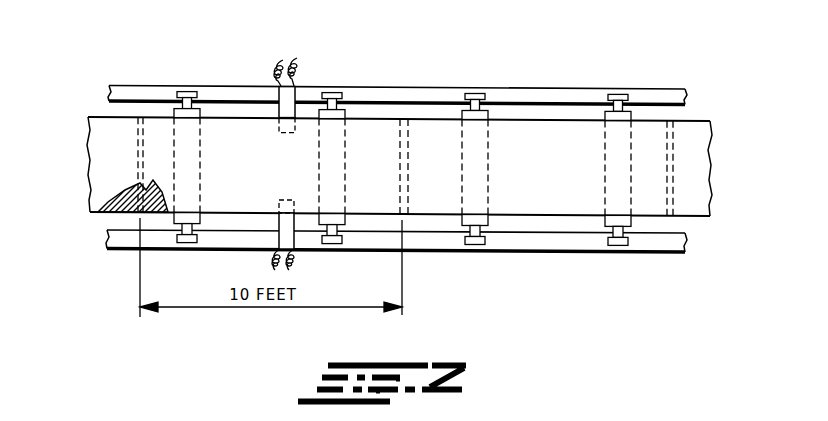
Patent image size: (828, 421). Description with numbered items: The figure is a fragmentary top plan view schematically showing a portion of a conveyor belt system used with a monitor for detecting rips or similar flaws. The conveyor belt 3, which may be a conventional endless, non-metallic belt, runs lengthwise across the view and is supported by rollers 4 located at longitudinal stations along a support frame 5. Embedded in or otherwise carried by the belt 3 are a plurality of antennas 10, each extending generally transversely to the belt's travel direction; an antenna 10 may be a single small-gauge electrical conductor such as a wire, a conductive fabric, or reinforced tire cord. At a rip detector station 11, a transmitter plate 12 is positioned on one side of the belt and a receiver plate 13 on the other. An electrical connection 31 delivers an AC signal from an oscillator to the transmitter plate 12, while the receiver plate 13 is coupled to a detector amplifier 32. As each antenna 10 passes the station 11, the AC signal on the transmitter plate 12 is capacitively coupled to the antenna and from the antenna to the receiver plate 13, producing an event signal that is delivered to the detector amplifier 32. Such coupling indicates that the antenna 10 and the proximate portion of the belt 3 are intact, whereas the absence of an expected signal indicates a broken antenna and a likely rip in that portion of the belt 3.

The conveyor belt 3 is at (433, 208).
The rollers 4 is at (203, 110).
The support frame 5 is at (125, 249).
The antennas 10 is at (407, 130).
The rip detector station 11 is at (292, 80).
The transmitter plate 12 is at (287, 95).
The receiver plate 13 is at (297, 237).
The electrical connection 31 is at (283, 60).
The detector amplifier 32 is at (273, 263).